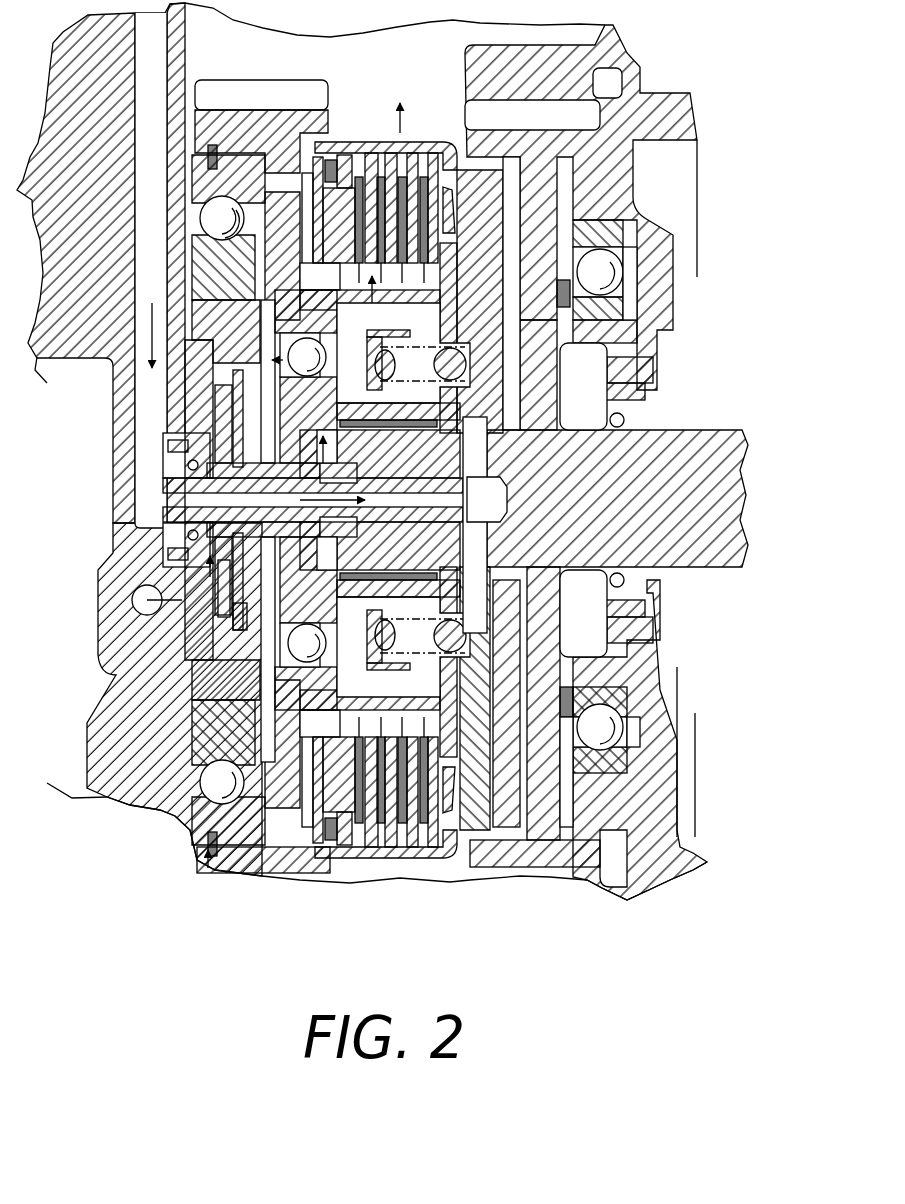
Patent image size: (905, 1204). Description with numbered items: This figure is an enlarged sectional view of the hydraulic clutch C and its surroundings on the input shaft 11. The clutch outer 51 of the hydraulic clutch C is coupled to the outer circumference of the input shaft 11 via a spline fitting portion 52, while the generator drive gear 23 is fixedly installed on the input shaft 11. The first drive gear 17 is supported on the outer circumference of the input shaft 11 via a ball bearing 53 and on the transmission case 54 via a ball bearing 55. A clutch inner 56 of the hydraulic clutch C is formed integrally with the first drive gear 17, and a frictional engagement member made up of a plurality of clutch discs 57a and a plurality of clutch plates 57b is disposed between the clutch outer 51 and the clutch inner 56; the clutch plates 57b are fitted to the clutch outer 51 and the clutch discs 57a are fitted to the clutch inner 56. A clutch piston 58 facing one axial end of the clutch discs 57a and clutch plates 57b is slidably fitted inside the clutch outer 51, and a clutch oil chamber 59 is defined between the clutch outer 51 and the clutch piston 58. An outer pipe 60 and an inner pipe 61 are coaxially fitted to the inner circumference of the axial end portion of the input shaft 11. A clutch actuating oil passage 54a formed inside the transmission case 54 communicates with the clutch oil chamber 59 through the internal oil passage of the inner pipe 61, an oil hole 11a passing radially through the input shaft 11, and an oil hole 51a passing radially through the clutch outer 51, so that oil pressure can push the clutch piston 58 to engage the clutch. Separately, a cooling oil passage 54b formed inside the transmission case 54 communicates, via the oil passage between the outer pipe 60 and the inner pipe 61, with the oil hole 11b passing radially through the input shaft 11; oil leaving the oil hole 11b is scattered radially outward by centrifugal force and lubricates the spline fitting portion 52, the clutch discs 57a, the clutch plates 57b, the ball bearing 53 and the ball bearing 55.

The input shaft 11 is at (690, 430).
The oil hole 11a is at (483, 436).
The oil hole 11b is at (337, 437).
The first drive gear 17 is at (270, 89).
The generator drive gear 23 is at (541, 115).
The clutch outer 51 is at (442, 136).
The oil hole 51a is at (472, 427).
The spline fitting portion 52 is at (408, 418).
The ball bearing 53 is at (306, 366).
The transmission case 54 is at (77, 365).
The clutch actuating oil passage 54a is at (145, 437).
The cooling oil passage 54b is at (148, 598).
The ball bearing 55 is at (212, 218).
The clutch inner 56 is at (358, 330).
The clutch discs 57a is at (378, 185).
The clutch plates 57b is at (410, 158).
The clutch piston 58 is at (382, 330).
The clutch oil chamber 59 is at (448, 240).
The outer pipe 60 is at (259, 470).
The inner pipe 61 is at (266, 520).
The hydraulic clutch C is at (401, 444).